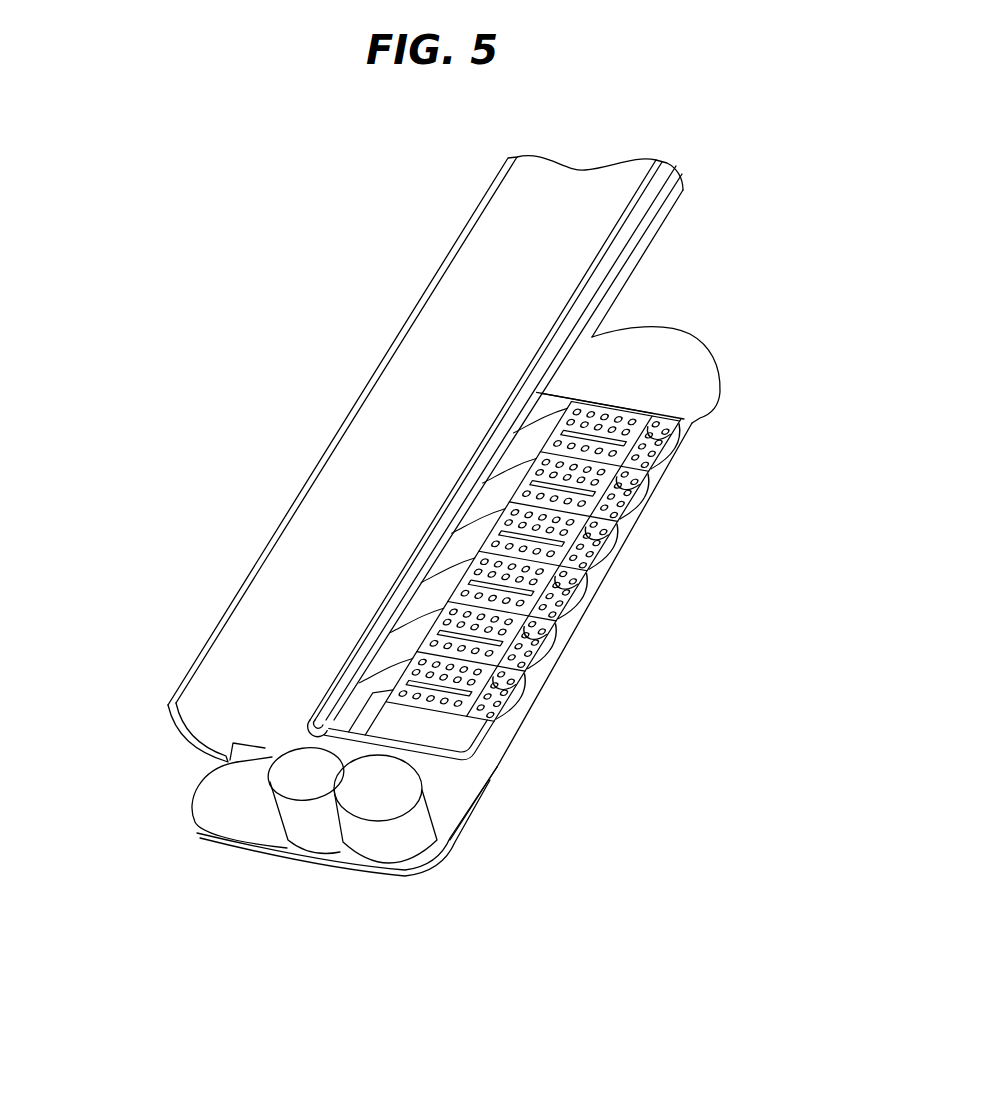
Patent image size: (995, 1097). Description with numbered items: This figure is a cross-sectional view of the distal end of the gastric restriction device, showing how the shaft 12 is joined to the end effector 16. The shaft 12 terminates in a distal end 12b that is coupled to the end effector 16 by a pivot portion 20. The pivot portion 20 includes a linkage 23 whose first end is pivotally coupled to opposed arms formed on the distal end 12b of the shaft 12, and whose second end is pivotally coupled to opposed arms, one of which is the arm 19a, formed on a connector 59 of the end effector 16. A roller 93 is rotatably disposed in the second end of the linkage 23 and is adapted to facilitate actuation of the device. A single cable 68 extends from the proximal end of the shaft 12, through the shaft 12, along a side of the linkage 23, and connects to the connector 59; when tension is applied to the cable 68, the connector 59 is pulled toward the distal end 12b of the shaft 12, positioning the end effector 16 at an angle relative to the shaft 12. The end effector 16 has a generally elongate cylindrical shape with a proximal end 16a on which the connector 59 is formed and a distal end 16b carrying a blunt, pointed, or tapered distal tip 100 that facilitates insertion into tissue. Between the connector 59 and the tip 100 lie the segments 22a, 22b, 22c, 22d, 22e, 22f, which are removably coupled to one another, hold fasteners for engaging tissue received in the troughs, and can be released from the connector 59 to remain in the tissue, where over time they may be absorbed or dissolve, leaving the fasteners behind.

The shaft 12 is at (408, 478).
The distal end 12b is at (181, 762).
The end effector 16 is at (733, 638).
The proximal end 16a is at (528, 760).
The distal end 16b is at (725, 446).
The arm 19a is at (417, 873).
The pivot portion 20 is at (417, 899).
The segment 22a is at (533, 705).
The segment 22b is at (565, 657).
The segment 22c is at (600, 610).
The segment 22d is at (620, 565).
The segment 22e is at (650, 513).
The segment 22f is at (678, 468).
The linkage 23 is at (213, 807).
The connector 59 is at (497, 767).
The cable 68 is at (378, 600).
The roller 93 is at (394, 801).
The distal tip 100 is at (648, 381).